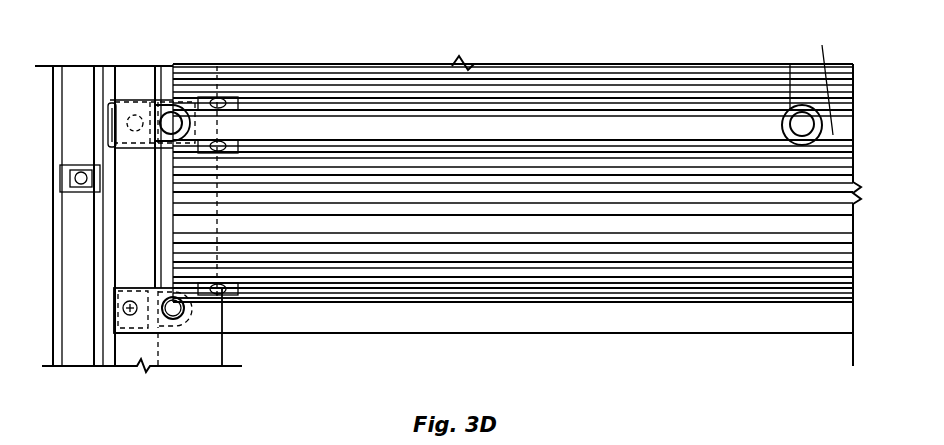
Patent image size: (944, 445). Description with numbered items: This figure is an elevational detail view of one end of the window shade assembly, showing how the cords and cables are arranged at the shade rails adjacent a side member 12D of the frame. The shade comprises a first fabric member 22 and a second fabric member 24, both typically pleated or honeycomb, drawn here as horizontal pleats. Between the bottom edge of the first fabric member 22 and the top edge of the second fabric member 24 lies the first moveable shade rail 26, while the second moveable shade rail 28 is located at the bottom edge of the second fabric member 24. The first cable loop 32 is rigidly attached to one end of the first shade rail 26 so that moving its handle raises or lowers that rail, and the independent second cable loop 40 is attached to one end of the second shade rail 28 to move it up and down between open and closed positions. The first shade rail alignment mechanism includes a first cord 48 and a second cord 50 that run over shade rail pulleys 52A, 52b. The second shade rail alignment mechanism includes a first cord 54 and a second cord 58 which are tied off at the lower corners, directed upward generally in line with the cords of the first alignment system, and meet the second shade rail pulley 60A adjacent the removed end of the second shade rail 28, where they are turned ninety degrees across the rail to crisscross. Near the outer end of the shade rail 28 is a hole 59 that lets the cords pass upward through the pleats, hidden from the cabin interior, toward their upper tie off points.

The side member 12D is at (62, 355).
The first fabric member 22 is at (532, 85).
The second fabric member 24 is at (796, 224).
The first moveable shade rail 26 is at (420, 136).
The second moveable shade rail 28 is at (473, 333).
The first cable loop 32 is at (155, 78).
The second cable loop 40 is at (117, 80).
The first cord 48 is at (483, 113).
The second cord 50 is at (790, 66).
The shade rail pulley 52A is at (200, 123).
The shade rail pulley 52b is at (782, 127).
The first cord 54 is at (625, 302).
The second cord 58 is at (740, 295).
The hole 59 is at (215, 285).
The second shade rail pulley 60A is at (195, 312).